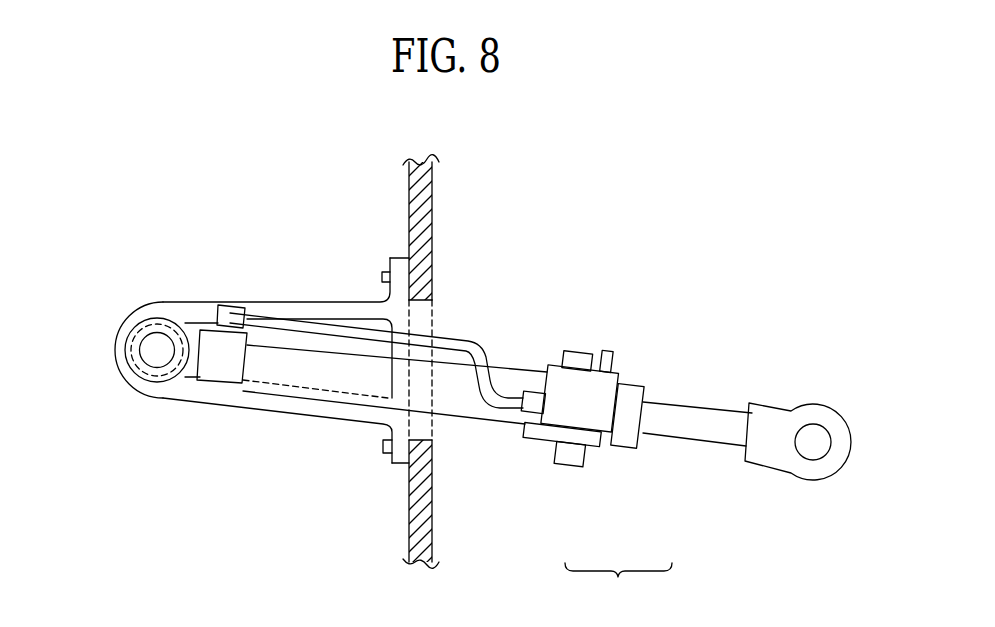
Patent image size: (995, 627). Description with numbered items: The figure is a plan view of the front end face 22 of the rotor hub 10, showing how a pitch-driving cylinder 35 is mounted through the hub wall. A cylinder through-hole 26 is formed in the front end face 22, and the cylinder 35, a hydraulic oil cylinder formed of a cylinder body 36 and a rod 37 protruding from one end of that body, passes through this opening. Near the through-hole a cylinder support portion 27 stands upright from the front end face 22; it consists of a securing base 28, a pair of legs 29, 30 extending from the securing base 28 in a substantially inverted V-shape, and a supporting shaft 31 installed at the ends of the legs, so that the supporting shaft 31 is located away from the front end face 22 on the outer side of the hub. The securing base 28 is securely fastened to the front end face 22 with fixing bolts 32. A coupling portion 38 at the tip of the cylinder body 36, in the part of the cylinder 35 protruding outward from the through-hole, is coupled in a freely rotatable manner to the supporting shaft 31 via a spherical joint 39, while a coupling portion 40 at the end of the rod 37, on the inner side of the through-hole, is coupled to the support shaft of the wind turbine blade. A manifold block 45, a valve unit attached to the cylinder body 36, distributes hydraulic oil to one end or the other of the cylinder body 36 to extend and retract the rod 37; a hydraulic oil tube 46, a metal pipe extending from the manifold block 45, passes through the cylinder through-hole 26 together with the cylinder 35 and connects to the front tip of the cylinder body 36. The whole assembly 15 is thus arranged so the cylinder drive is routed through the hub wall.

The damper device 15 is at (180, 196).
The rotor hub 10 is at (351, 350).
The front end face 22 is at (407, 186).
The cylinder through-hole 26 is at (434, 298).
The cylinder support portion 27 is at (150, 302).
The securing base 28 is at (400, 257).
The leg 29 is at (284, 420).
The leg 30 is at (296, 302).
The supporting shaft 31 is at (155, 350).
The fixing bolt 32 is at (383, 450).
The cylinder 35 is at (474, 455).
The cylinder body 36 is at (503, 432).
The rod 37 is at (683, 440).
The coupling portion 38 is at (130, 378).
The spherical joint 39 is at (172, 392).
The coupling portion 40 is at (823, 478).
The manifold block 45 is at (578, 352).
The hydraulic oil tube 46 is at (470, 342).